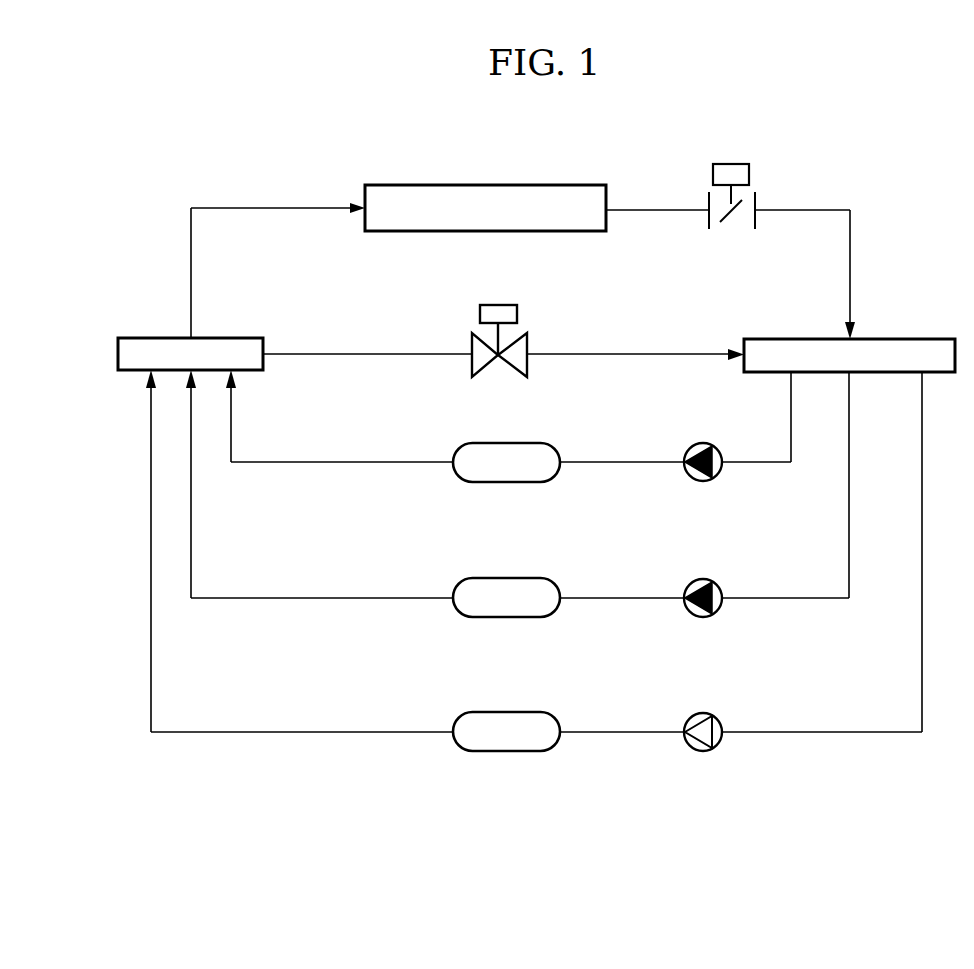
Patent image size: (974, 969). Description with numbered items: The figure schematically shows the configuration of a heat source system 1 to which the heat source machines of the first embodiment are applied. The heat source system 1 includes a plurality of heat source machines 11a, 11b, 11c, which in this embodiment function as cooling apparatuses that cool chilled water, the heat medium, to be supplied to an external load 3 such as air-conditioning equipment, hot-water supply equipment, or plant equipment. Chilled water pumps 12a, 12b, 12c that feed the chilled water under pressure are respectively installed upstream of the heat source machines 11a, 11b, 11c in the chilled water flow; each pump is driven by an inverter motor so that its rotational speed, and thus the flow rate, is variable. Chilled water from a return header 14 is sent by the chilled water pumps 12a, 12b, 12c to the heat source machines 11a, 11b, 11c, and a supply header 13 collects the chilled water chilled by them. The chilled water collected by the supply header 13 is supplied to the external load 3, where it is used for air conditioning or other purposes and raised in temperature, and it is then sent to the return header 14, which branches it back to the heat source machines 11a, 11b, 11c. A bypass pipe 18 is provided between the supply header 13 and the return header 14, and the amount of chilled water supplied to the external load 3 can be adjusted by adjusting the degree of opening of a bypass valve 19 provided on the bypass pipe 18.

The heat source system 1 is at (154, 216).
The external load 3 is at (568, 185).
The heat source machine 11a is at (492, 443).
The heat source machine 11b is at (492, 578).
The heat source machine 11c is at (492, 712).
The chilled water pump 12a is at (702, 443).
The chilled water pump 12b is at (702, 579).
The chilled water pump 12c is at (702, 713).
The supply header 13 is at (167, 337).
The return header 14 is at (937, 339).
The bypass pipe 18 is at (678, 353).
The bypass valve 19 is at (471, 346).